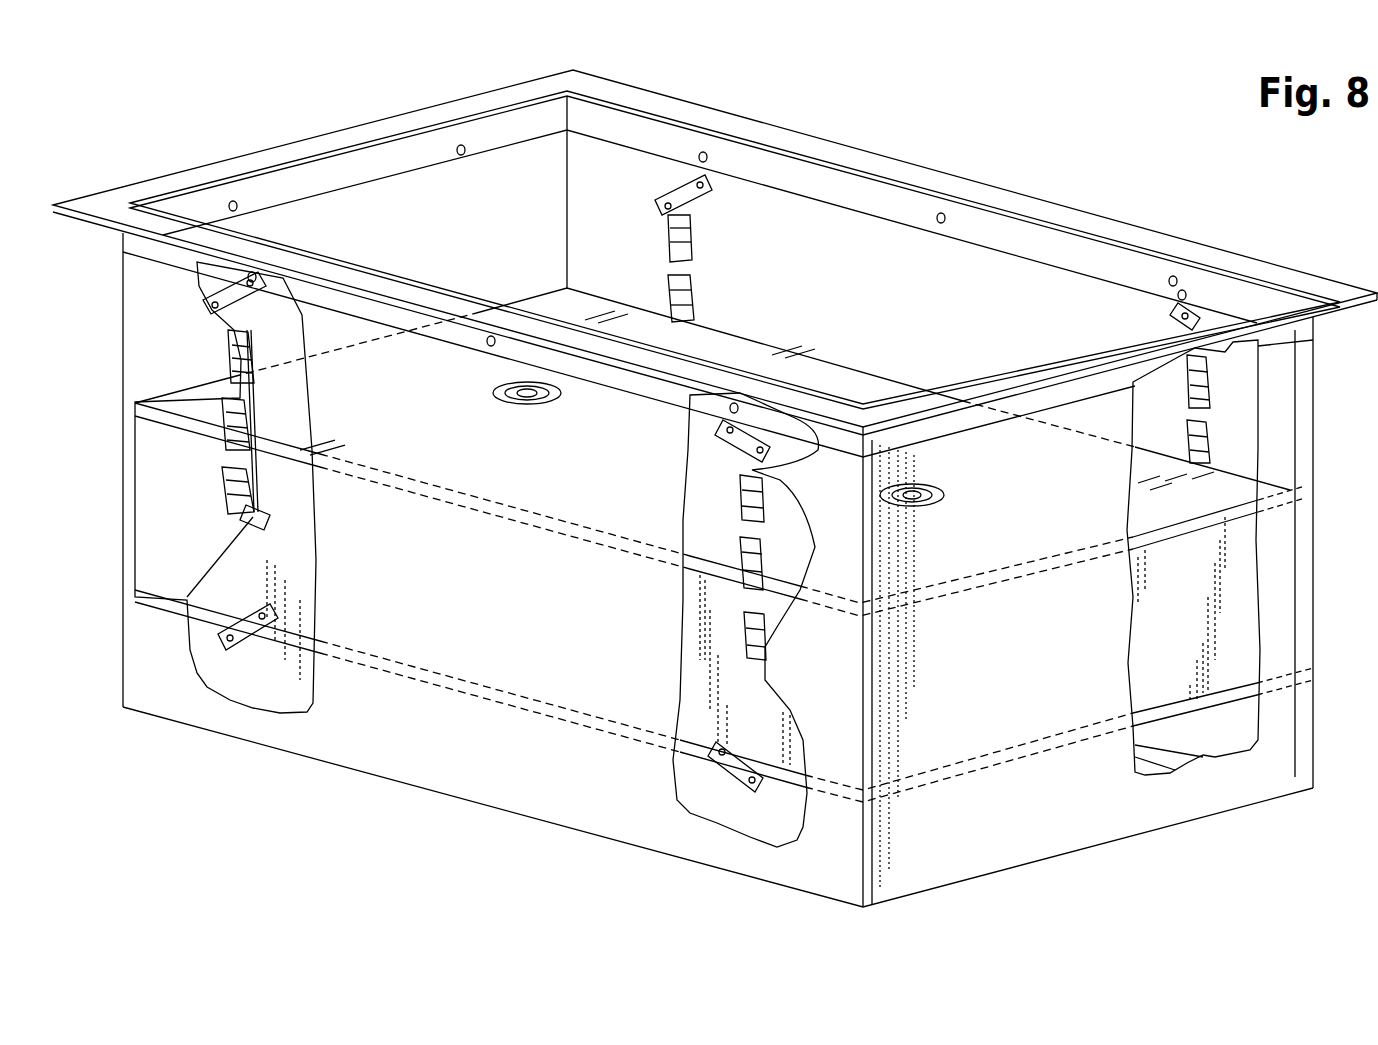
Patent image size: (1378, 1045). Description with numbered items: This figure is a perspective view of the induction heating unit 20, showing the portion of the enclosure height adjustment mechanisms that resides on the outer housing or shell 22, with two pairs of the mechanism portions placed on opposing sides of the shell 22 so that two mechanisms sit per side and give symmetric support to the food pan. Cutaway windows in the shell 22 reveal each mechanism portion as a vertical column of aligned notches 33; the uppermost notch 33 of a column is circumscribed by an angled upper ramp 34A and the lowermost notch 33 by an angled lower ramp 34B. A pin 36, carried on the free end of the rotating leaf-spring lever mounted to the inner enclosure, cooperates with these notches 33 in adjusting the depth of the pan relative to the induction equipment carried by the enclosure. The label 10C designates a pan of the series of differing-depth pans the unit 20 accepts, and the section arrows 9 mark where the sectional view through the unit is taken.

The induction heating unit 20 is at (1038, 184).
The outer housing or shell 22 is at (1088, 815).
The notches 33 is at (672, 292).
The upper ramp 34A is at (214, 290).
The lower ramp 34B is at (250, 650).
The pin 36 is at (242, 521).
The sink assembly (cutaway) 10C is at (1190, 607).
The section line for Fig. 9 is at (813, 107).